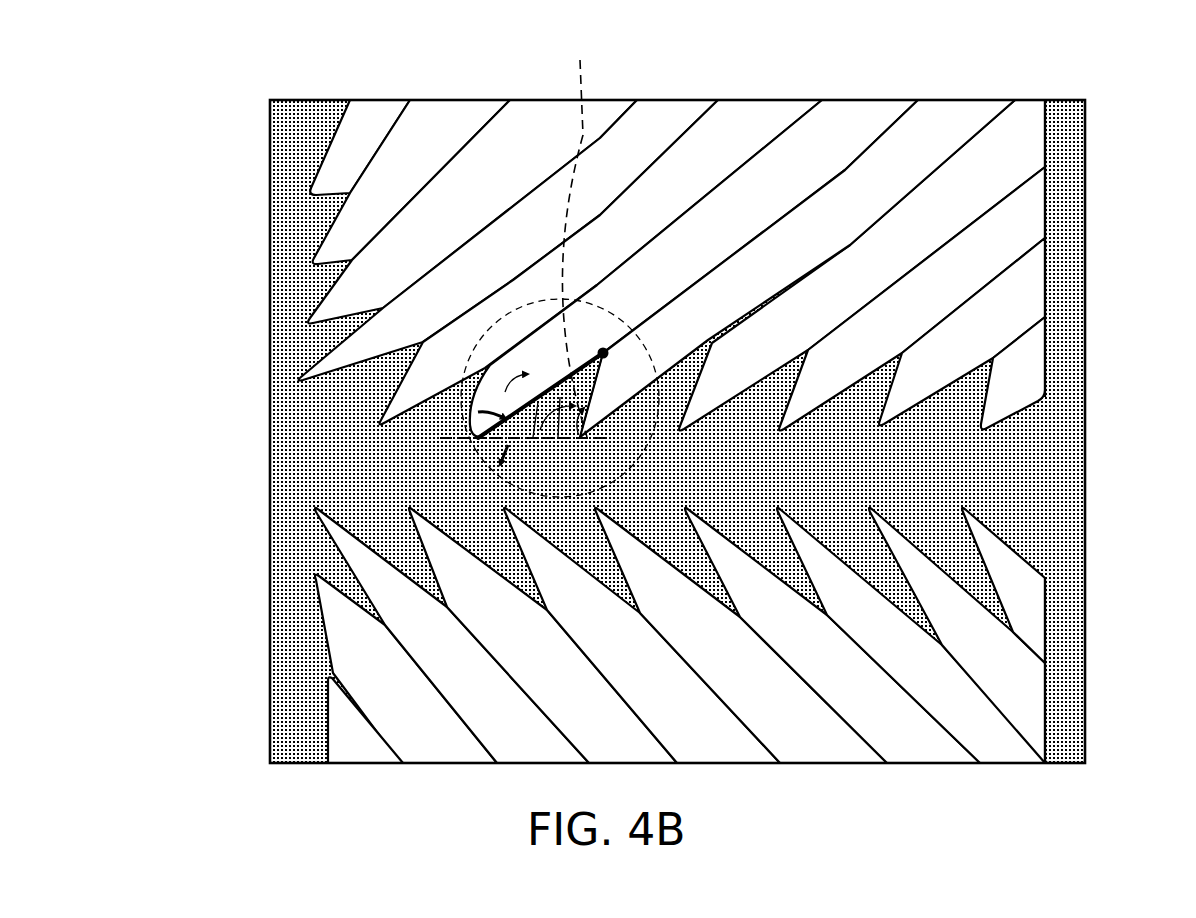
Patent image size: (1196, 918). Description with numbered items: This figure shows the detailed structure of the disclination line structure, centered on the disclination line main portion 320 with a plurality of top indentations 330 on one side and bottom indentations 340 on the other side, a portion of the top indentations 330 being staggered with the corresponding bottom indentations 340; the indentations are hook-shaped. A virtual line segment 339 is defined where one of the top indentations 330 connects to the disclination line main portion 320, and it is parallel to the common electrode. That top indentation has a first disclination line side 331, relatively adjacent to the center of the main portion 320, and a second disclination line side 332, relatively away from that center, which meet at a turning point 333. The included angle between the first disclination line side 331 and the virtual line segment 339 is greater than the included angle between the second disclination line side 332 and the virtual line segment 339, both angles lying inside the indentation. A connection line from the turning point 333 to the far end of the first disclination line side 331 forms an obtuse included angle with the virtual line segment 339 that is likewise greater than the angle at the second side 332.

The disclination line main portion 320 is at (940, 467).
The top indentations 330 is at (512, 520).
The first disclination line side 331 is at (600, 398).
The second disclination line side 332 is at (574, 234).
The turning point 333 is at (605, 350).
The virtual line segment 339 is at (445, 437).
The bottom indentations 340 is at (470, 520).